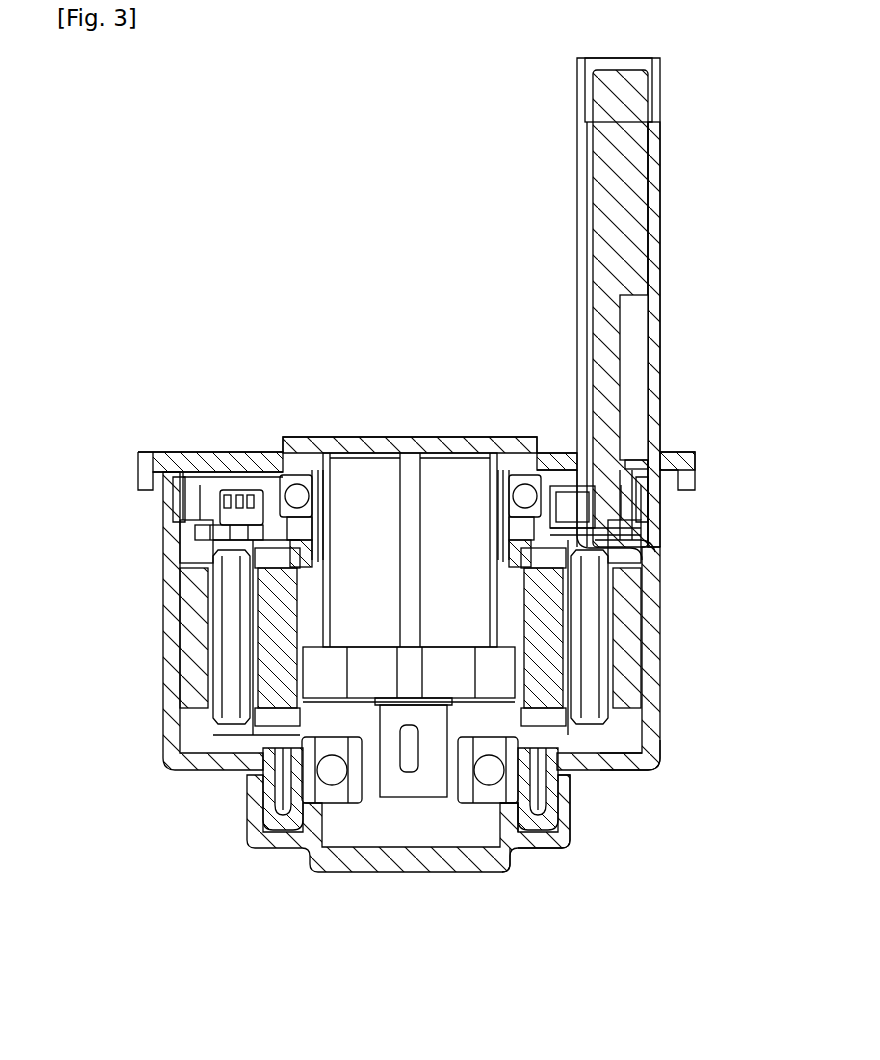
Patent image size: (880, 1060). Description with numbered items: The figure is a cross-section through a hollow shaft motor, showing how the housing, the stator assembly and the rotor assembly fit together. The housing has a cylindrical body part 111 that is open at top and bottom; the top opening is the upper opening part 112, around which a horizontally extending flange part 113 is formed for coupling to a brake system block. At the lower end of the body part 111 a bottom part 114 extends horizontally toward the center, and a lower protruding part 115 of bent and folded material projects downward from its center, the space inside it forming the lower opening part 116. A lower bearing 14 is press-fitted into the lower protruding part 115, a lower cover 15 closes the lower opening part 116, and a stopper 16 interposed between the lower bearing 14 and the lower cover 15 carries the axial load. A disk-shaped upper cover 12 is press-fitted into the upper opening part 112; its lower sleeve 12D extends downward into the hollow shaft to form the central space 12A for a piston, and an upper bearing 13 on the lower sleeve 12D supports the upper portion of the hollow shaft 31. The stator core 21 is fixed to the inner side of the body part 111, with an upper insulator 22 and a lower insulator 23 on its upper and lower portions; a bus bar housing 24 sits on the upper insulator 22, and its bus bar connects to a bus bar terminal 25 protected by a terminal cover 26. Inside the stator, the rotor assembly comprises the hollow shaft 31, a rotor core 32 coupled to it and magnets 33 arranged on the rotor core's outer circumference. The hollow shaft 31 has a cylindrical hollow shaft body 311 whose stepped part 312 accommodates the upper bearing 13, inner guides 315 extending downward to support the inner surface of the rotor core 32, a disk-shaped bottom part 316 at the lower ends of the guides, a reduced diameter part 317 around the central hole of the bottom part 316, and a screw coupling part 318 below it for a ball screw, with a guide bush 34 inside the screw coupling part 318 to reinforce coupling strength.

The upper cover 12 is at (316, 436).
The central space 12A is at (333, 490).
The lower sleeve 12D is at (622, 605).
The upper bearing 13 is at (296, 484).
The lower bearing 14 is at (282, 810).
The lower cover 15 is at (385, 862).
The stopper 16 is at (311, 819).
The stator core 21 is at (192, 580).
The upper insulator 22 is at (192, 552).
The lower insulator 23 is at (205, 725).
The bus bar housing 24 is at (225, 500).
The bus bar terminal 25 is at (632, 233).
The terminal cover 26 is at (655, 170).
The hollow shaft 31 is at (240, 605).
The rotor core 32 is at (278, 652).
The magnets 33 is at (268, 690).
The guide bush 34 is at (420, 782).
The body part 111 is at (652, 635).
The upper opening part 112 is at (638, 460).
The flange part 113 is at (690, 462).
The bottom part 114 is at (648, 766).
The lower protruding part 115 is at (565, 815).
The lower opening part 116 is at (503, 802).
The hollow shaft body 311 is at (640, 550).
The stepped part 312 is at (600, 520).
The inner guide 315 is at (585, 670).
The bottom part 316 is at (600, 700).
The reduced diameter part 317 is at (548, 790).
The screw coupling part 318 is at (457, 778).